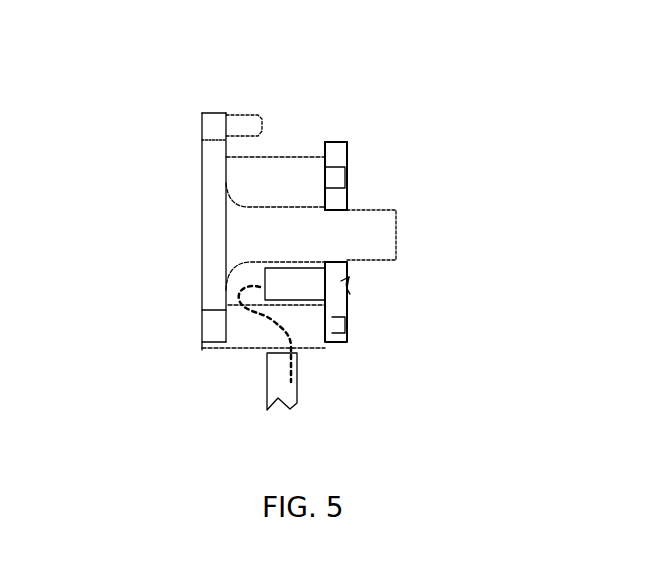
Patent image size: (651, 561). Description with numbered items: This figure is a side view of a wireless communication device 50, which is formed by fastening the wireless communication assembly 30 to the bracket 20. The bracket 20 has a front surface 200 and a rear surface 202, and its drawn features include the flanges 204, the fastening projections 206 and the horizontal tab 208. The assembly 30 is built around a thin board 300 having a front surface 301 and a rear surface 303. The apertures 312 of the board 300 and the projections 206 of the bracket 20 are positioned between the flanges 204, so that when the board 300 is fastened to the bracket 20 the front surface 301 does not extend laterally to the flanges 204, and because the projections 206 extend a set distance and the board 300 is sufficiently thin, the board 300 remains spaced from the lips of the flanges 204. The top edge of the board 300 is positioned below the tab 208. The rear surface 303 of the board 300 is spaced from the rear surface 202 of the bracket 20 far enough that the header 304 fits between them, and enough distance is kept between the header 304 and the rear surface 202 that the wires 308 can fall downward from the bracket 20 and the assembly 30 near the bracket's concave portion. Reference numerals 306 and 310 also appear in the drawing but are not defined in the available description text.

The wireless communication device 50 is at (112, 102).
The bracket 20 is at (193, 118).
The front surface 200 is at (207, 299).
The rear surface 202 is at (225, 145).
The flanges 204 is at (257, 242).
The fastening projections 206 is at (260, 178).
The horizontal tab 208 is at (242, 122).
The wireless communication assembly 30 is at (336, 128).
The board 300 is at (347, 142).
The front surface of the board 301 is at (347, 152).
The rear surface of the board 303 is at (325, 150).
The header 304 is at (295, 287).
The lower clip portion 306 is at (350, 285).
The wires 308 is at (283, 330).
The cable 310 is at (287, 392).
The apertures 312 is at (347, 175).